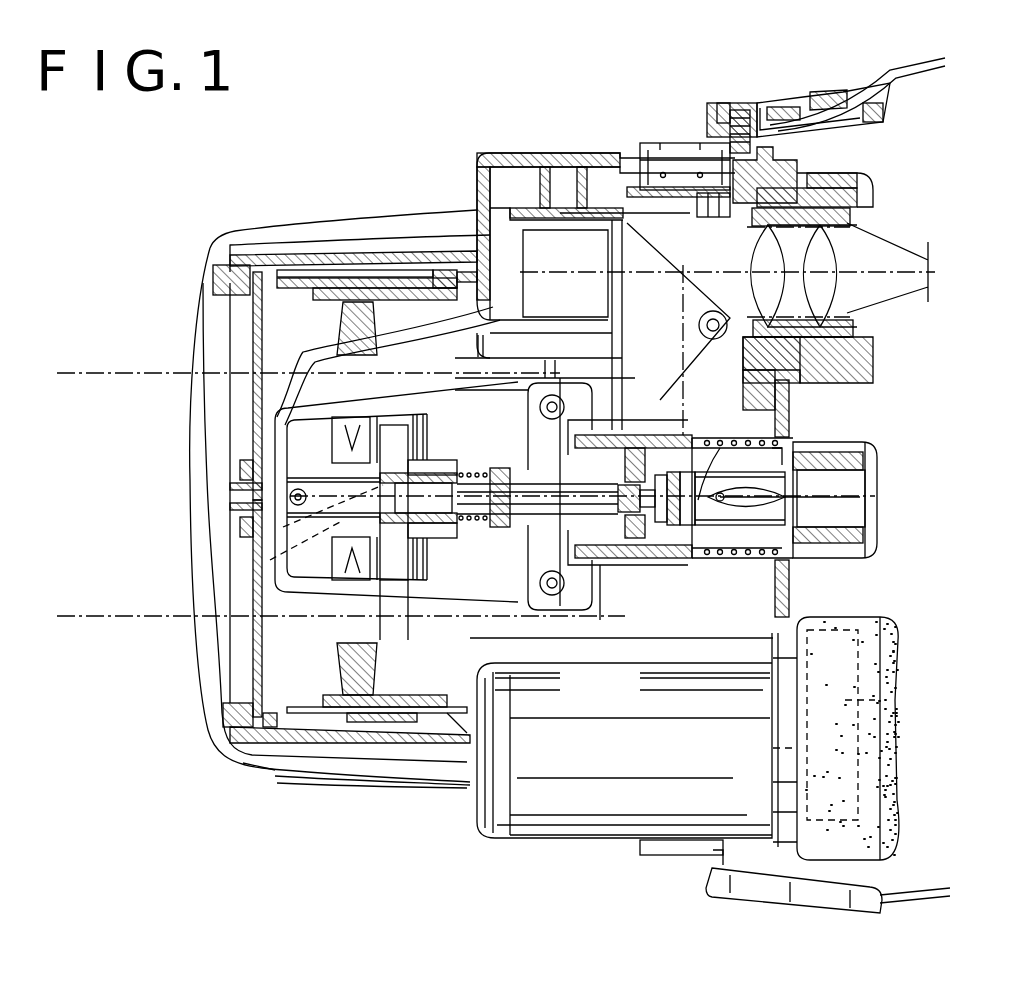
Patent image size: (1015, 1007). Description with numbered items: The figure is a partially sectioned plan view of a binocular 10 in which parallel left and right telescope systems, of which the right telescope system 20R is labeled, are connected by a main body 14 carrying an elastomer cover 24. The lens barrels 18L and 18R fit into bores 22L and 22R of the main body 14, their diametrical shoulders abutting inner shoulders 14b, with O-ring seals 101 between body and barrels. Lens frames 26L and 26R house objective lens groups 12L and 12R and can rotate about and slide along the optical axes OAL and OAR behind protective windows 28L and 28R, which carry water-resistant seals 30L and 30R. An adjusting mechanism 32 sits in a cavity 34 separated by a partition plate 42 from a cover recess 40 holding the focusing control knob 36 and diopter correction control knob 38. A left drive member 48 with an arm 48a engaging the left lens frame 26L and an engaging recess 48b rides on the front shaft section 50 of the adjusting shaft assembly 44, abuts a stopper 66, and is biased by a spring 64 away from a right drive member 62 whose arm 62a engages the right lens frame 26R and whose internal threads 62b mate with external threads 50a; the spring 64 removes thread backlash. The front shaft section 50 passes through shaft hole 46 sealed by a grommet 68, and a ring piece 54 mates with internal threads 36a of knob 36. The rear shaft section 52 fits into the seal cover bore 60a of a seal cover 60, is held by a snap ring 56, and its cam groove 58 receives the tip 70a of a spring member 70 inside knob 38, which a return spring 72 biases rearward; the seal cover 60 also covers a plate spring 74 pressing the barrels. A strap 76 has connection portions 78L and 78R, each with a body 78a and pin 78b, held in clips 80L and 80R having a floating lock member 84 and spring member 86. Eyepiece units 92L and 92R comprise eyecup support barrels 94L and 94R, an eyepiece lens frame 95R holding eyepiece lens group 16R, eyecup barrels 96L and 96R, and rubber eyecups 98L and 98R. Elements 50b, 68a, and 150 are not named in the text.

The binocular 10 is at (395, 168).
The objective lens group 12R is at (377, 312).
The objective lens group 12L is at (375, 680).
The main body 14 is at (335, 212).
The inner shoulder 14b is at (375, 270).
The eyepiece lens group 16R is at (855, 305).
The lens barrel 18R is at (535, 172).
The lens barrel 18L is at (475, 795).
The telescope system 20R is at (462, 172).
The bore 22R is at (285, 262).
The bore 22L is at (305, 757).
The cover 24 is at (195, 493).
The lens frame 26R is at (430, 256).
The lens frame 26L is at (340, 745).
The protective window 28R is at (263, 325).
The protective window 28L is at (263, 682).
The water-resistant seal 30R is at (255, 245).
The water-resistant seal 30L is at (262, 742).
The adjusting mechanism 32 is at (545, 600).
The cavity 34 is at (250, 545).
The focusing control knob 36 is at (670, 530).
The internal threads 36a is at (600, 580).
The diopter correction control knob 38 is at (875, 470).
The cover recess 40 is at (705, 527).
The partition plate 42 is at (495, 410).
The adjusting shaft assembly 44 is at (608, 560).
The shaft hole 46 is at (565, 600).
The left drive member 48 is at (458, 532).
The arm 48a is at (400, 580).
The engaging recess 48b is at (457, 560).
The front shaft section 50 is at (495, 528).
The external threads 50a is at (255, 555).
The hinge block portion 50b is at (508, 334).
The rear shaft section 52 is at (745, 527).
The ring piece 54 is at (624, 465).
The snap ring 56 is at (660, 398).
The cam groove 58 is at (785, 550).
The seal cover 60 is at (782, 425).
The seal cover bore 60a is at (697, 440).
The right drive member 62 is at (380, 468).
The arm 62a is at (420, 410).
The internal threads 62b is at (240, 533).
The spring 64 is at (473, 470).
The stopper 66 is at (500, 465).
The grommet 68 is at (560, 480).
The shaft portion 68a is at (618, 500).
The spring member 70 is at (875, 490).
The tip 70a is at (865, 502).
The return spring 72 is at (790, 585).
The plate spring 74 is at (790, 392).
The strap 76 is at (900, 88).
The connection portion 78R is at (885, 128).
The connection portion 78L is at (710, 885).
The body 78a is at (705, 110).
The pin 78b is at (755, 140).
The clip 80R is at (690, 130).
The clip 80L is at (683, 862).
The floating lock member 84 is at (655, 160).
The spring member 86 is at (683, 197).
The eyepiece unit 92R is at (880, 365).
The eyepiece unit 92L is at (903, 630).
The eyecup support barrel 94R is at (850, 212).
The eyecup support barrel 94L is at (805, 805).
The eyepiece lens frame 95R is at (860, 335).
The eyecup barrel 96R is at (840, 178).
The eyecup barrel 96L is at (885, 700).
The rubber eyecup 98R is at (885, 180).
The rubber eyecup 98L is at (893, 755).
The O-ring seal 101 is at (505, 268).
The optical axis OAR is at (100, 372).
The optical axis OAL is at (78, 614).